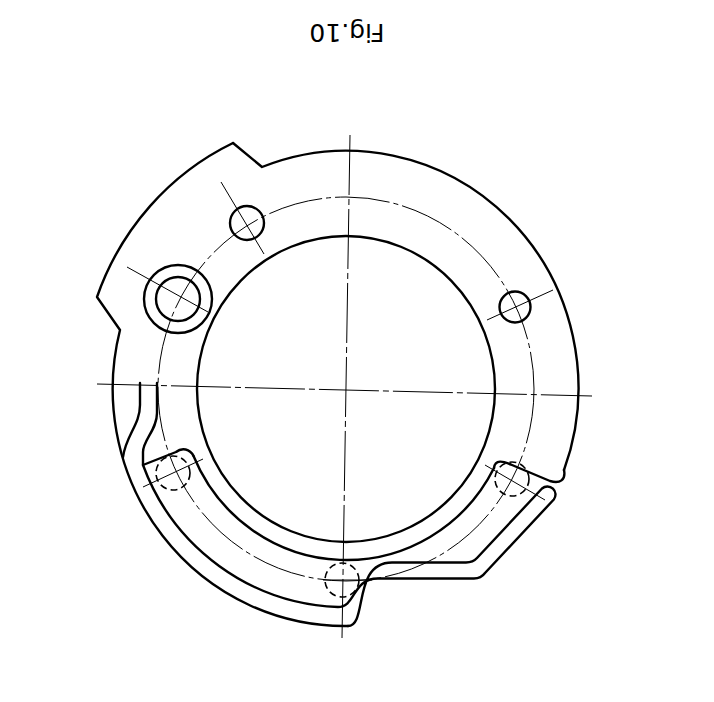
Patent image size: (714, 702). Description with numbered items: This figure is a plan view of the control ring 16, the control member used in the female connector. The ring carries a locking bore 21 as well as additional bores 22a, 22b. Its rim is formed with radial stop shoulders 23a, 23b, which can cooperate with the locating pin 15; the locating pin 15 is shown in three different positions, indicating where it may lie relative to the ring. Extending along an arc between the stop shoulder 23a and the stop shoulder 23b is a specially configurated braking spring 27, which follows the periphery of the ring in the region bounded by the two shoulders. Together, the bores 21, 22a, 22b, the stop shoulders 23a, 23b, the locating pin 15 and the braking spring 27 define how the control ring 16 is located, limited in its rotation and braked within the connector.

The control ring 16 is at (516, 209).
The locking bore 21 is at (167, 299).
The additional bore 22a is at (251, 207).
The additional bore 22b is at (530, 310).
The radial stop shoulder 23a is at (523, 465).
The radial stop shoulder 23b is at (124, 455).
The locating pin 15 is at (178, 460).
The braking spring 27 is at (262, 600).